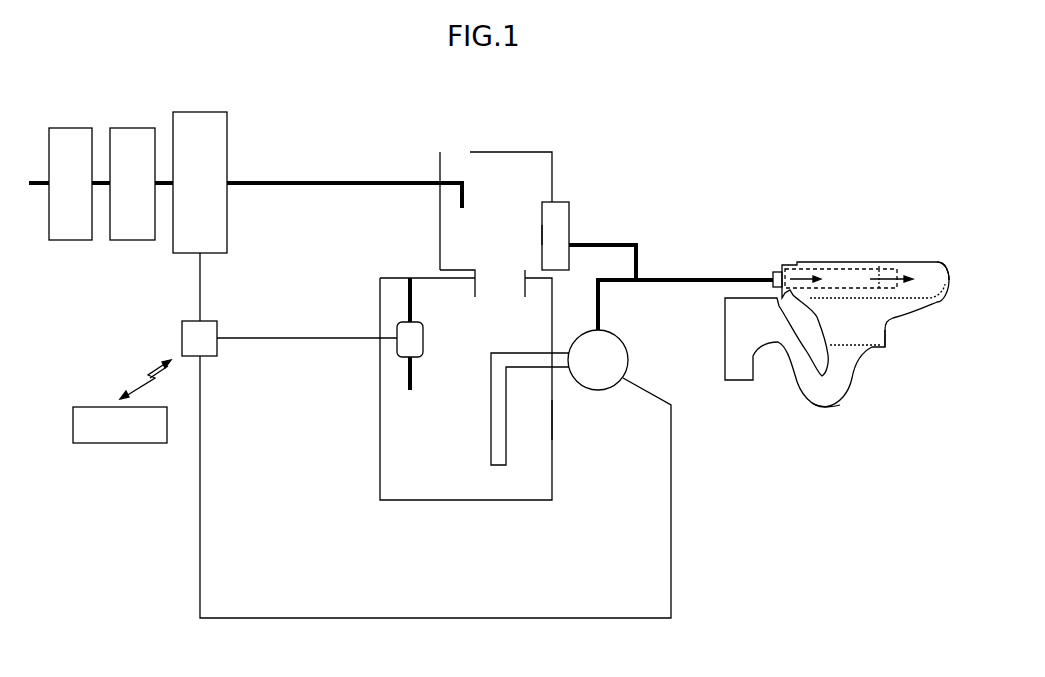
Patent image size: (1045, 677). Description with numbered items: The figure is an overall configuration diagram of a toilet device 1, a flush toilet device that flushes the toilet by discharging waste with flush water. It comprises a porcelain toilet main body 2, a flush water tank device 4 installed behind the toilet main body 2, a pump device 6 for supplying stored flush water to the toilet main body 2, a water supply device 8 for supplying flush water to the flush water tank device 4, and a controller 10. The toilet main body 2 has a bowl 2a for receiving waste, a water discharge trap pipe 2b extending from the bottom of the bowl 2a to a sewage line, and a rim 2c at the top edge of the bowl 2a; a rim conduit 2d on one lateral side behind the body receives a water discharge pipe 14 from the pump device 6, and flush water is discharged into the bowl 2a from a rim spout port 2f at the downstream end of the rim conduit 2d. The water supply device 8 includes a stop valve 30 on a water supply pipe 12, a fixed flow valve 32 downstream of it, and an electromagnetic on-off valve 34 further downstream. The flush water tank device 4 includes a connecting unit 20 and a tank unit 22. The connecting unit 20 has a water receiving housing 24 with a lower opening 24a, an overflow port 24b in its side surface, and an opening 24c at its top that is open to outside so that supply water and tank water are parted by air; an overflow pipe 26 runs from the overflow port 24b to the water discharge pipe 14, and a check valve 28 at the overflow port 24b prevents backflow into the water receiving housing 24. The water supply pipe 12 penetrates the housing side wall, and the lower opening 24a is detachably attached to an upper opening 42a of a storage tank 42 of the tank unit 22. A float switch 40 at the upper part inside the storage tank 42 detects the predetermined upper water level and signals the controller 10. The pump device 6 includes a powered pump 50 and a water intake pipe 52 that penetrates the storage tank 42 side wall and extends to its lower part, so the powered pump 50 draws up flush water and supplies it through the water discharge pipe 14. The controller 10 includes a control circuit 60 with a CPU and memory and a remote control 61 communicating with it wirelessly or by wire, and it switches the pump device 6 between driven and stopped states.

The toilet device 1 is at (724, 111).
The toilet main body 2 is at (895, 245).
The bowl 2a is at (890, 322).
The water discharge trap pipe 2b is at (825, 398).
The rim 2c is at (940, 262).
The rim conduit 2d is at (850, 270).
The rim spout port 2f is at (880, 266).
The flush water tank device 4 is at (602, 129).
The pump device 6 is at (640, 338).
The water supply device 8 is at (172, 81).
The controller 10 is at (217, 304).
The water supply pipe 12 is at (358, 180).
The water discharge pipe 14 is at (669, 276).
The connecting unit 20 is at (527, 141).
The tank unit 22 is at (562, 468).
The water receiving housing 24 is at (553, 174).
The lower opening 24a is at (475, 292).
The overflow port 24b is at (545, 232).
The opening 24c is at (455, 150).
The overflow pipe 26 is at (617, 243).
The check valve 28 is at (557, 218).
The stop valve 30 is at (74, 128).
The fixed flow valve 32 is at (132, 128).
The electromagnetic on-off valve 34 is at (219, 112).
The float switch 40 is at (424, 338).
The storage tank 42 is at (553, 420).
The upper opening 42a is at (516, 281).
The powered pump 50 is at (630, 357).
The water intake pipe 52 is at (492, 405).
The control circuit 60 is at (218, 327).
The remote control 61 is at (147, 443).